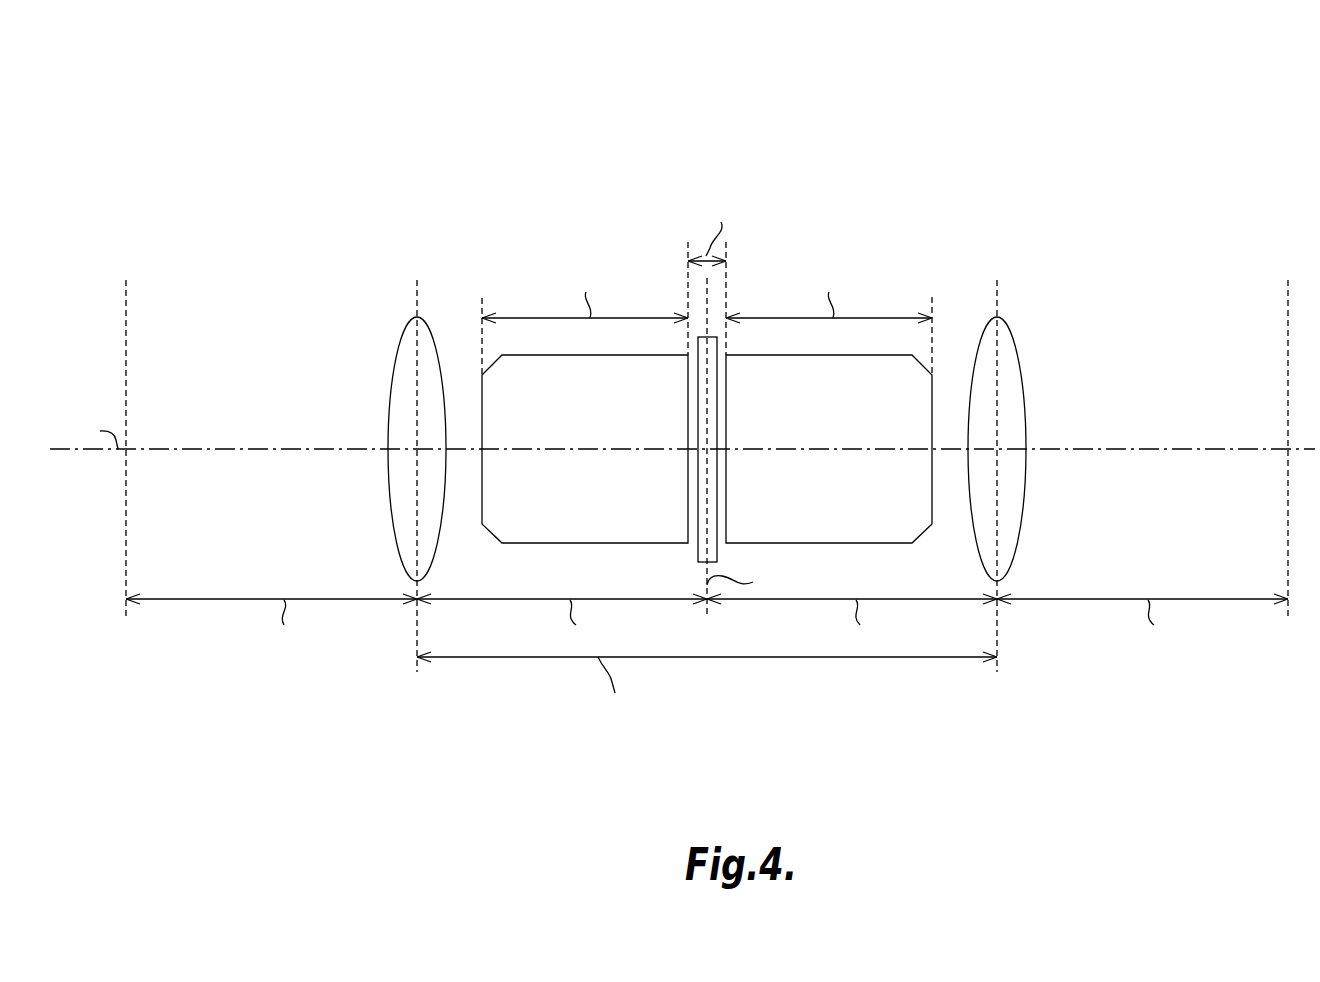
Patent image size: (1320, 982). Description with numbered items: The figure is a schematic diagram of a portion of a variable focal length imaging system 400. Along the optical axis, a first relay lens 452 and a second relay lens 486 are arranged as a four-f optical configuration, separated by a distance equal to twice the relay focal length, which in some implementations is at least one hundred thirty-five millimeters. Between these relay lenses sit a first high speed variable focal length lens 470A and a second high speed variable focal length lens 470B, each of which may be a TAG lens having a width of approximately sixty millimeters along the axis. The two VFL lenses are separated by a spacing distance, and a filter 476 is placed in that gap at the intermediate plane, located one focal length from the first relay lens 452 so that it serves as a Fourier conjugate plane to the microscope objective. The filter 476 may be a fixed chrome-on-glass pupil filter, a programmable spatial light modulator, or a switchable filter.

The variable focal length imaging system 400 is at (999, 102).
The first relay lens 452 is at (400, 339).
The first high speed variable focal length lens 470A is at (482, 400).
The second high speed variable focal length lens 470B is at (932, 393).
The filter 476 is at (697, 547).
The second relay lens 486 is at (1018, 349).